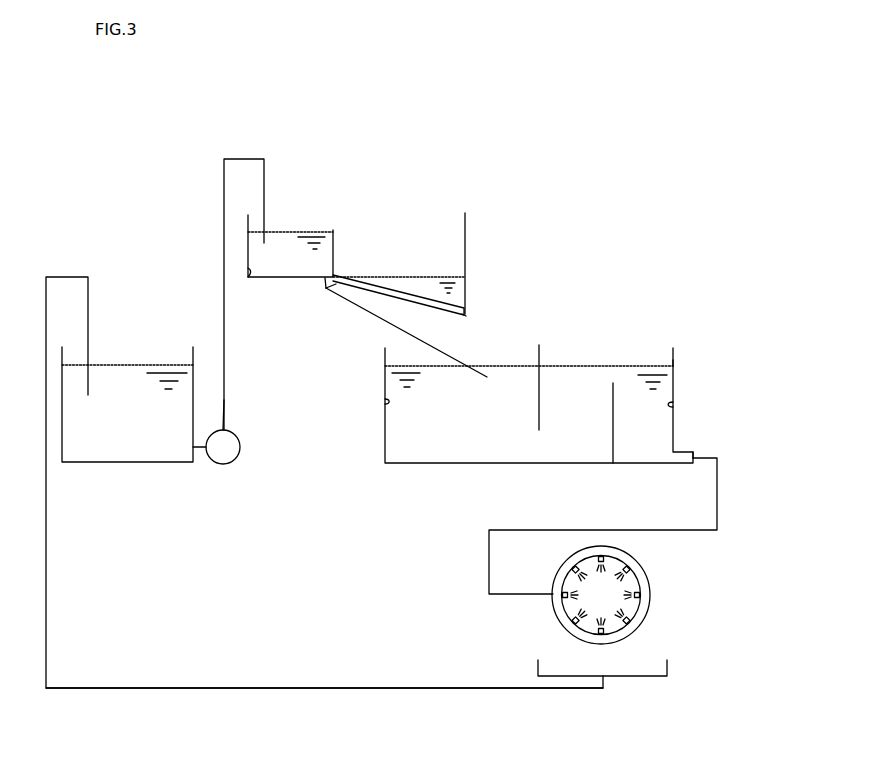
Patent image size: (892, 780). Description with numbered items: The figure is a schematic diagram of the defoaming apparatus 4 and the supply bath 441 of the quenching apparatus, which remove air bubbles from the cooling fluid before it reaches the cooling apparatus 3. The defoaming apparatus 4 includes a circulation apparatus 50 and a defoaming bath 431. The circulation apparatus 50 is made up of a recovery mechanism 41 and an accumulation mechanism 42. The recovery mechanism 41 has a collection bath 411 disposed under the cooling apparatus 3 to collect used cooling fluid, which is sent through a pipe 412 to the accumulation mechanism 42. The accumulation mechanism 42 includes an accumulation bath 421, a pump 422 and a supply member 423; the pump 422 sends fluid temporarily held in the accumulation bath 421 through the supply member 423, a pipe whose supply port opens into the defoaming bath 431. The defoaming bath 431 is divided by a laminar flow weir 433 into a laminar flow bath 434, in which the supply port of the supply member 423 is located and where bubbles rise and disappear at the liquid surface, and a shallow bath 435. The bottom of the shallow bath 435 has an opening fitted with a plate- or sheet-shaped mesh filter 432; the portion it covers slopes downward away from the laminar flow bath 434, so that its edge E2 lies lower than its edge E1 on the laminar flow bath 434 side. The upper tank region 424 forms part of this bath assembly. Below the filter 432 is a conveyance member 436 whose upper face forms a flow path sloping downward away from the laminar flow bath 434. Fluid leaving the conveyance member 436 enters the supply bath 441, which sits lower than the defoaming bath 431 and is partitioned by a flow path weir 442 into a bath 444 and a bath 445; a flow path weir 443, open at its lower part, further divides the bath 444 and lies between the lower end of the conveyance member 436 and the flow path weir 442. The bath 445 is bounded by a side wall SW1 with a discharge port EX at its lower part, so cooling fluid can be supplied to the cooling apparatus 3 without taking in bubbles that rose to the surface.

The cooling apparatus 3 is at (650, 582).
The defoaming apparatus 4 is at (275, 157).
The recovery mechanism 41 is at (356, 706).
The collection bath 411 is at (638, 678).
The pipe 412 is at (131, 690).
The accumulation mechanism 42 is at (186, 440).
The accumulation bath 421 is at (73, 463).
The pump 422 is at (241, 447).
The supply member 423 is at (226, 357).
The upper tank 424 is at (265, 242).
The defoaming bath 431 is at (377, 266).
The filter 432 is at (416, 296).
The laminar flow weir 433 is at (333, 250).
The laminar flow bath 434 is at (250, 272).
The shallow bath 435 is at (465, 250).
The conveyance member 436 is at (375, 315).
The supply bath 441 is at (423, 472).
The flow path weir 442 is at (612, 437).
The flow path weir 443 is at (540, 377).
The bath 444 is at (385, 402).
The bath 445 is at (670, 405).
The circulation apparatus 50 is at (127, 276).
The edge E1 is at (340, 286).
The edge E2 is at (458, 317).
The side wall SW1 is at (673, 362).
The discharge port EX is at (697, 455).